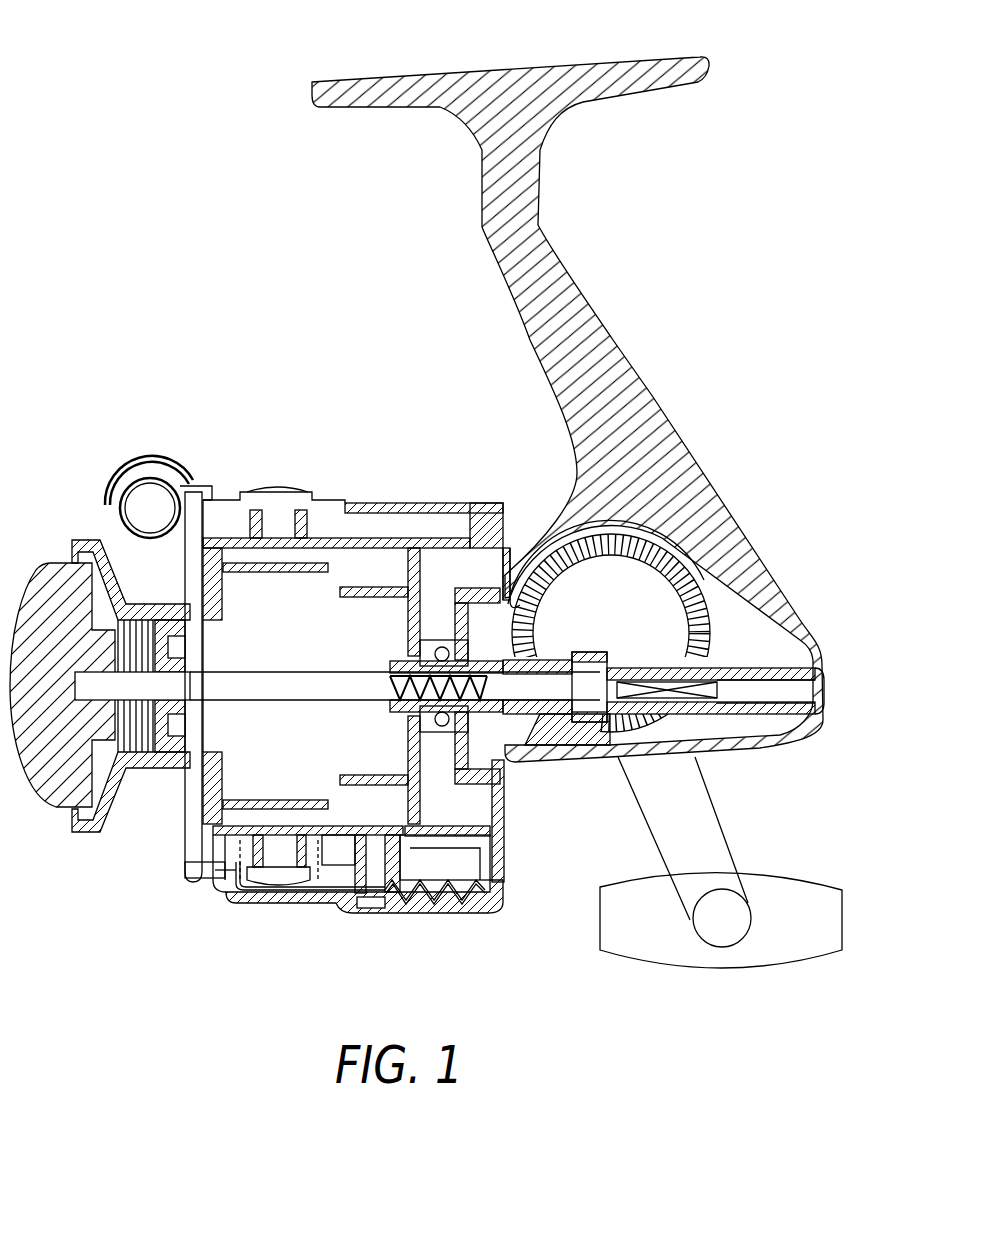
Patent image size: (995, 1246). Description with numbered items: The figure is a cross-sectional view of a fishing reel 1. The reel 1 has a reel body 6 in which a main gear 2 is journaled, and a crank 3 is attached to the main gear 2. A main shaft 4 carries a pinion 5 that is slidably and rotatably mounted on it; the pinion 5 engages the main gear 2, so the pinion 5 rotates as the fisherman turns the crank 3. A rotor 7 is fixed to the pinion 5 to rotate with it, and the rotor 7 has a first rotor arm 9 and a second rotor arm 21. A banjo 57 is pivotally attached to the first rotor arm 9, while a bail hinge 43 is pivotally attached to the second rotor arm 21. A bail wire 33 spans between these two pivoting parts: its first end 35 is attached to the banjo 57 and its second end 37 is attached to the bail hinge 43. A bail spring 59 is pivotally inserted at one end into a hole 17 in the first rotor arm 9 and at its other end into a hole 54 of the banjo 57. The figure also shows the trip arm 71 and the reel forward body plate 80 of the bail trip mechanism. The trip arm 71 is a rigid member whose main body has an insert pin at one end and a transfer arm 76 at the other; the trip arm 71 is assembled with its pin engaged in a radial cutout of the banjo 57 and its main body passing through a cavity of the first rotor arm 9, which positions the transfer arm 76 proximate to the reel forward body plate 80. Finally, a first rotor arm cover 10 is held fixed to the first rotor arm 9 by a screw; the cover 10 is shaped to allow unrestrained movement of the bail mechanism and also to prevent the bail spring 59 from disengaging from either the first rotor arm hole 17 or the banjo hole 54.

The reel 1 is at (198, 92).
The main gear 2 is at (692, 605).
The crank 3 is at (692, 832).
The main shaft 4 is at (270, 682).
The pinion 5 is at (553, 656).
The reel body 6 is at (640, 402).
The rotor 7 is at (358, 368).
The first rotor arm 9 is at (306, 834).
The first rotor arm cover 10 is at (283, 898).
The hole 17 is at (497, 880).
The second rotor arm 21 is at (400, 503).
The bail wire 33 is at (198, 788).
The first end 35 is at (196, 870).
The second end 37 is at (190, 486).
The bail hinge 43 is at (210, 496).
The hole 54 is at (232, 882).
The banjo 57 is at (216, 880).
The bail spring 59 is at (398, 906).
The trip arm 71 is at (458, 860).
The transfer arm 76 is at (490, 816).
The reel forward body plate 80 is at (520, 566).